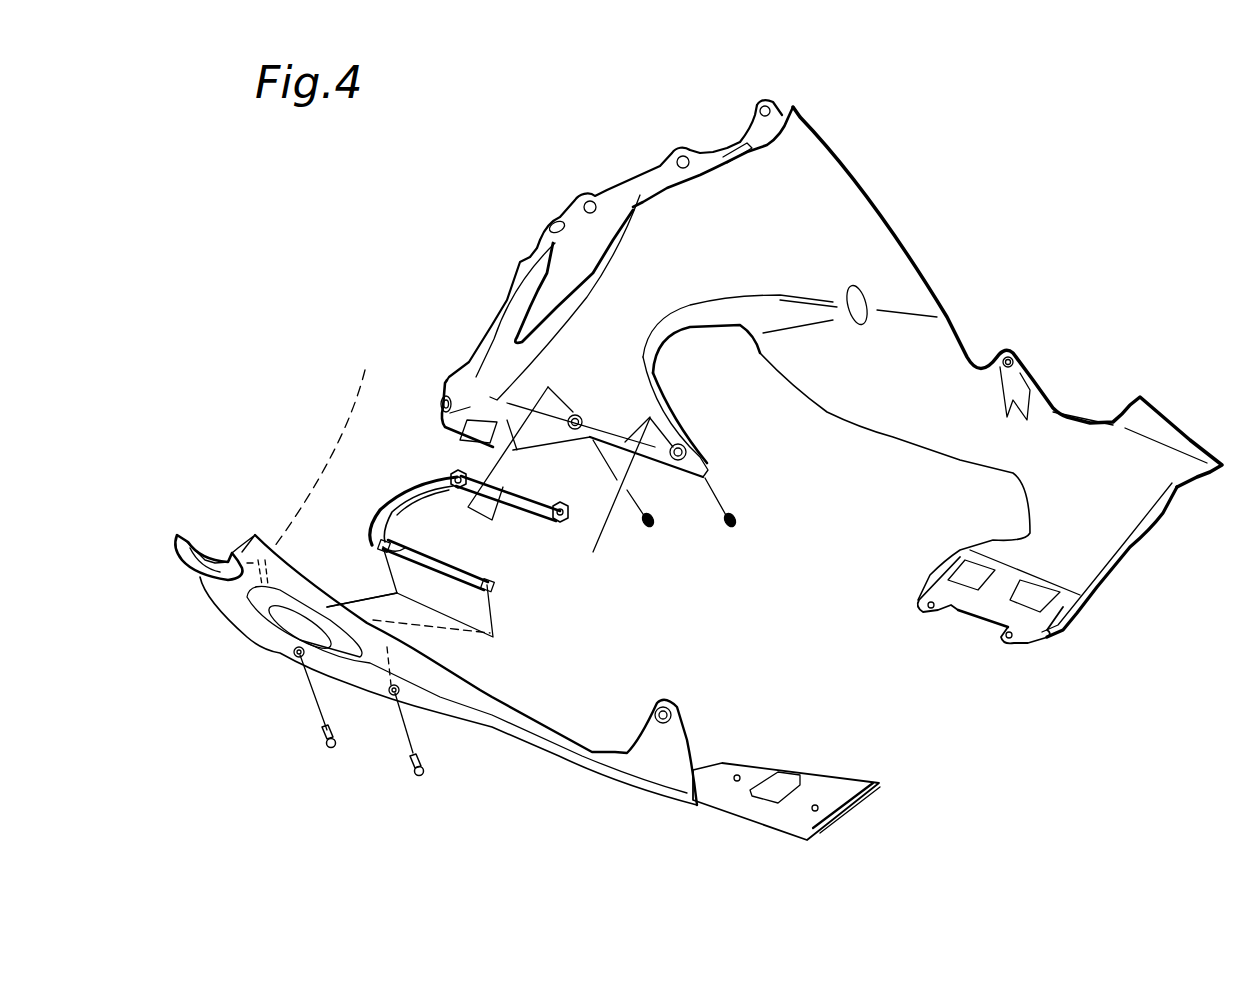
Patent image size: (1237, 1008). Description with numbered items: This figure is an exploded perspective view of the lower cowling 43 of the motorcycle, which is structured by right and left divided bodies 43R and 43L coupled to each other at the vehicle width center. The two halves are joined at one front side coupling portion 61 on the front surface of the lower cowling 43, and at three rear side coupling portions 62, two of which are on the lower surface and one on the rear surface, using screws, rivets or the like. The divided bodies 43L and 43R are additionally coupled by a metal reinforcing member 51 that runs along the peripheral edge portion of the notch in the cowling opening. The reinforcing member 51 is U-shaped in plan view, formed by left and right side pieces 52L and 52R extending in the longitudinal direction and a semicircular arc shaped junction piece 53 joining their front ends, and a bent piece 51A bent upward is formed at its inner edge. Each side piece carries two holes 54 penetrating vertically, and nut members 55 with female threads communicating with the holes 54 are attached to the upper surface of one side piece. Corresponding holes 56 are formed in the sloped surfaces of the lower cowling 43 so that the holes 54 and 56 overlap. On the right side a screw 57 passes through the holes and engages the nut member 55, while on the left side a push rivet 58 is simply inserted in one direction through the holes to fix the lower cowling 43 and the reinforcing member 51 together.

The lower cowling 43 is at (905, 150).
The right divided body 43R is at (912, 242).
The left divided body 43L is at (622, 793).
The reinforcing member 51 is at (397, 478).
The bent piece 51A is at (408, 540).
The right side piece 52R is at (525, 517).
The left side piece 52L is at (437, 578).
The junction piece 53 is at (372, 509).
The hole 54 is at (380, 548).
The nut member 55 is at (458, 473).
The hole 56 is at (582, 418).
The screw 57 is at (650, 524).
The push rivet 58 is at (325, 752).
The front side coupling portion 61 is at (440, 400).
The rear side coupling portion 62 is at (931, 607).